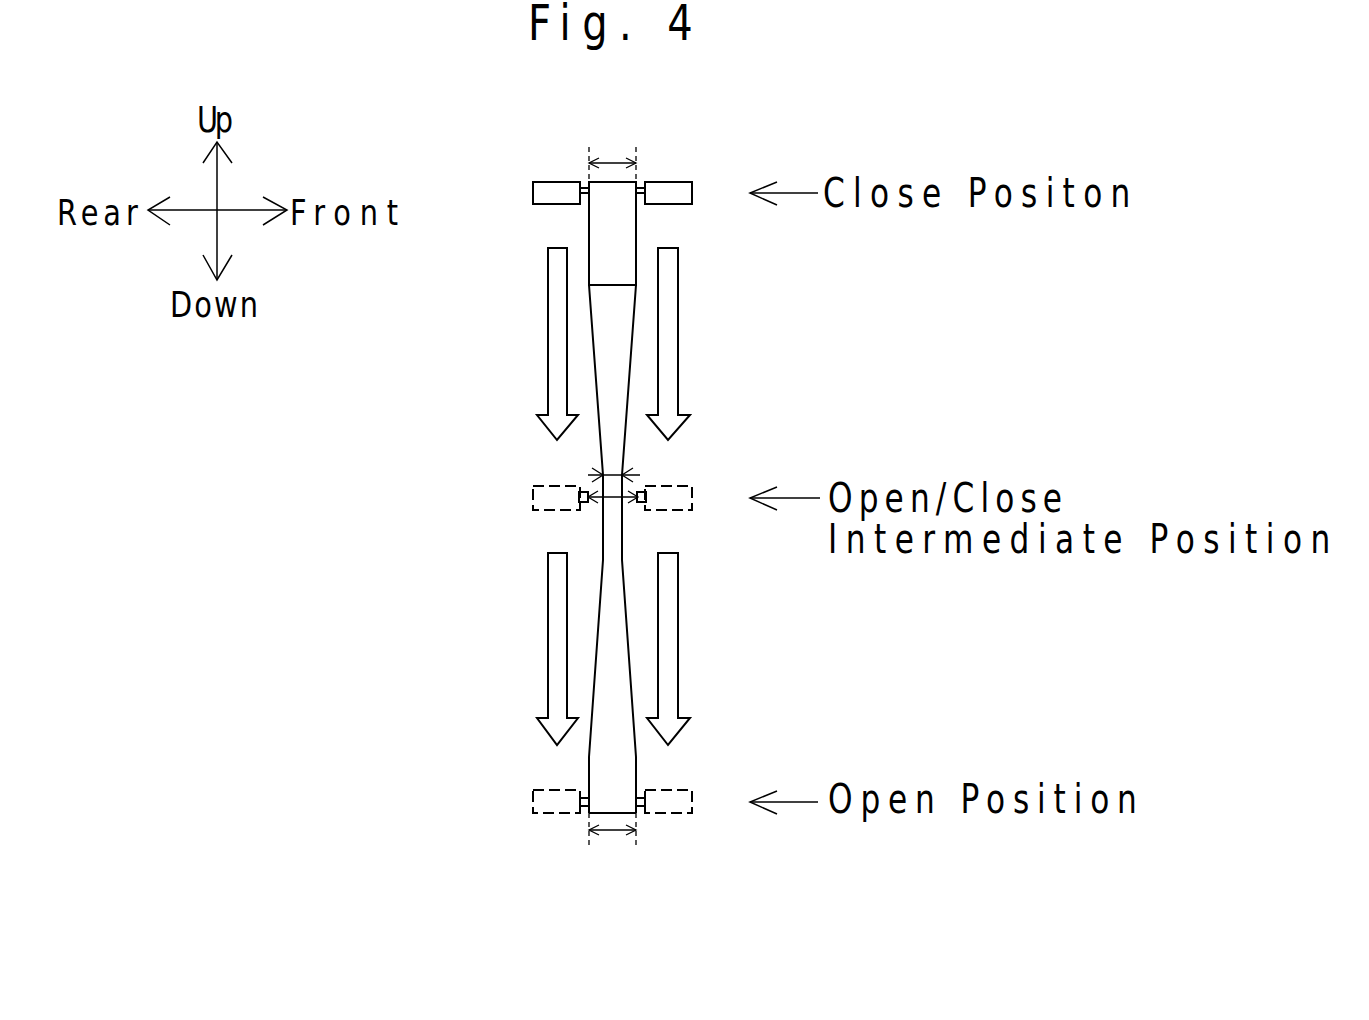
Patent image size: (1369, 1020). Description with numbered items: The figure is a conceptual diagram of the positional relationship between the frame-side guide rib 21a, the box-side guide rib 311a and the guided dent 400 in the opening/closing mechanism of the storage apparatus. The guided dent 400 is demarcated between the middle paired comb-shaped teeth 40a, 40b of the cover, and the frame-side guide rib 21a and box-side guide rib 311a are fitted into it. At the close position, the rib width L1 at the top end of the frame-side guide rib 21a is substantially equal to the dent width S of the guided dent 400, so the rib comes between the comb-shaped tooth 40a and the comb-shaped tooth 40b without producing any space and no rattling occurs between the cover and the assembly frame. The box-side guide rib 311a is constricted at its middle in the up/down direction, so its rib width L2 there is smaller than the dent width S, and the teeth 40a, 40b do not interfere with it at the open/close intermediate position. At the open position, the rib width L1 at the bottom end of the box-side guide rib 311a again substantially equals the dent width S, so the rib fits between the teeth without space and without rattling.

The comb-shaped tooth 40a is at (557, 182).
The comb-shaped tooth 40b is at (667, 182).
The frame-side guide rib 21a is at (589, 225).
The box-side guide rib 311a is at (622, 532).
The guided dent 400 is at (607, 503).
The dent width S is at (504, 538).
The rib width L1 is at (612, 499).
The rib width L2 is at (613, 473).